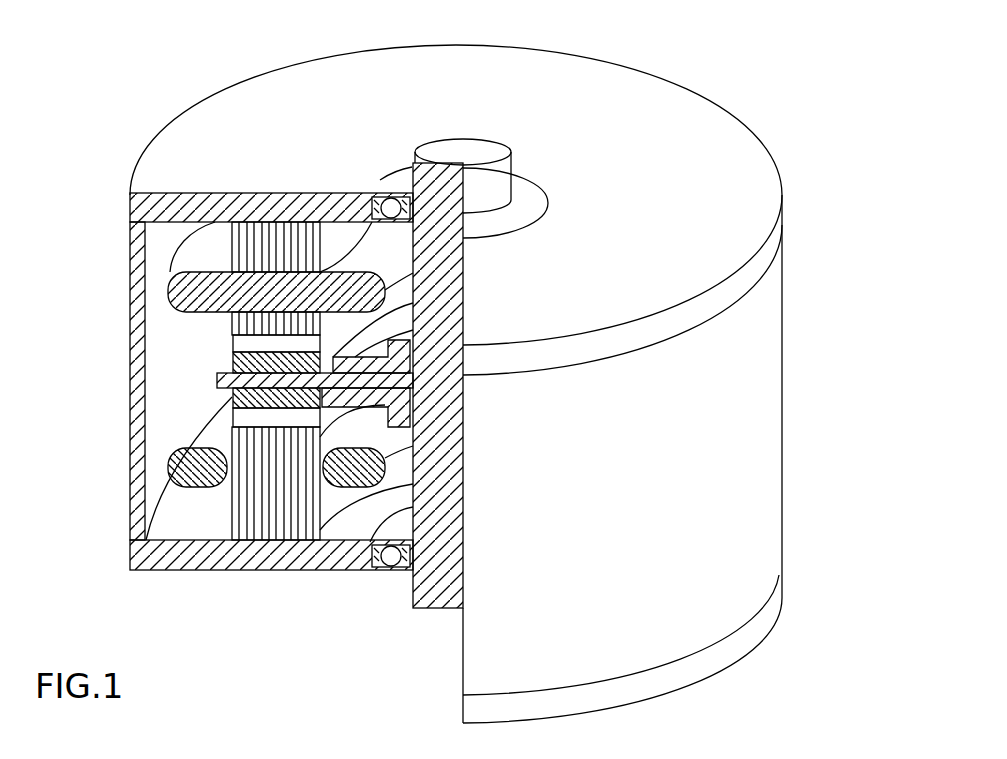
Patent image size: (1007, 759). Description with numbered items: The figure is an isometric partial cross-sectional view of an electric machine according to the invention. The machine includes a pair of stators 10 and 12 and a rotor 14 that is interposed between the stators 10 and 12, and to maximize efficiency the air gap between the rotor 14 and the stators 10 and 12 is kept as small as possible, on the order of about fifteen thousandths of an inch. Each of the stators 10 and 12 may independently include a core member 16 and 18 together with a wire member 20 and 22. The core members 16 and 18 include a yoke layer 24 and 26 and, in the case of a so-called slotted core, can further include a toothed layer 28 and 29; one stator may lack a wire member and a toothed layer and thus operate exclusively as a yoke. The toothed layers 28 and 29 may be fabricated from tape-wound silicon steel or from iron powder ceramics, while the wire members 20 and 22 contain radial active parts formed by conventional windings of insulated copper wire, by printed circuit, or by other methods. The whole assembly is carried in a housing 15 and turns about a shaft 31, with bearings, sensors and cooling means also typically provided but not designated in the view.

The stator 10 is at (164, 571).
The stator 12 is at (215, 231).
The rotor 14 is at (218, 379).
The housing 15 is at (628, 97).
The core member 16 is at (320, 570).
The core member 18 is at (300, 220).
The wire member 20 is at (172, 475).
The wire member 22 is at (167, 300).
The yoke layer 24 is at (273, 530).
The yoke layer 26 is at (271, 231).
The toothed layer 28 is at (253, 440).
The toothed layer 29 is at (230, 328).
The shaft 31 is at (457, 148).